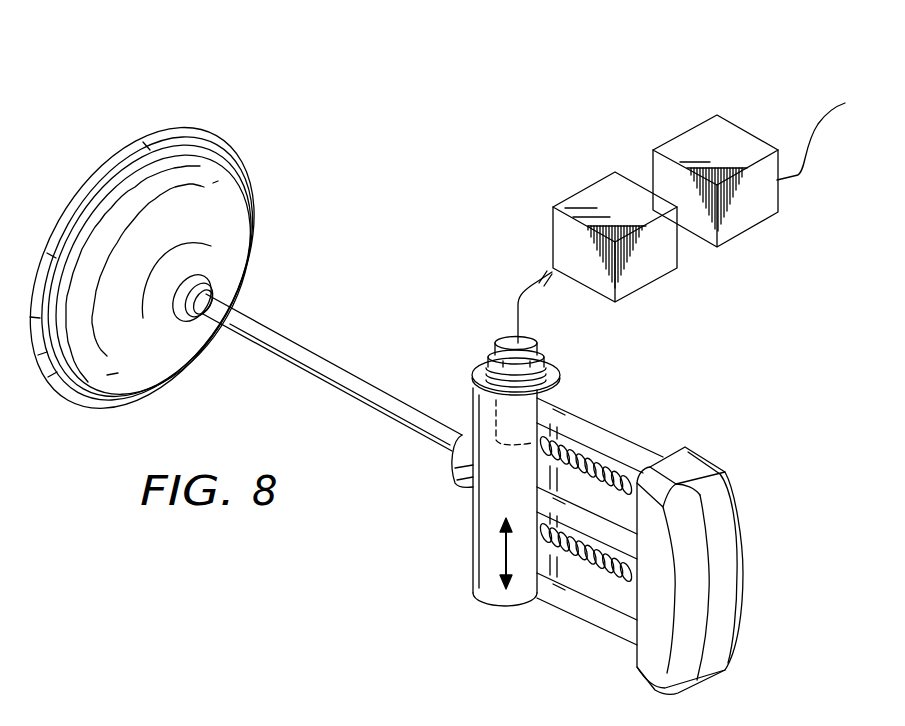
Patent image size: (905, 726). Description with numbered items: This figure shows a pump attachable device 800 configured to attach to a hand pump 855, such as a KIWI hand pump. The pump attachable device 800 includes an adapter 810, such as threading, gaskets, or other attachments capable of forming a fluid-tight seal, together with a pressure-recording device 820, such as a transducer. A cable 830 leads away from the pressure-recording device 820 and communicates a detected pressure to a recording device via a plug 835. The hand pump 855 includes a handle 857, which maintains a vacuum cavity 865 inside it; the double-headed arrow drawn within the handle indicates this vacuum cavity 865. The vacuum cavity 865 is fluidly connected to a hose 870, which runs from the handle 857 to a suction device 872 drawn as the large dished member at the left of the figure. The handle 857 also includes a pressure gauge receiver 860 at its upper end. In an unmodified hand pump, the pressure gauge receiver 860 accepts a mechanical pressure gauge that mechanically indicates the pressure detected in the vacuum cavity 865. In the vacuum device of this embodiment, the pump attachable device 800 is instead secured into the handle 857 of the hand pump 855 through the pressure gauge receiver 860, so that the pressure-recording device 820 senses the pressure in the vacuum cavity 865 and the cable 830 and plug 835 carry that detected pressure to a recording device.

The pump attachable device 800 is at (396, 81).
The adapter 810 is at (555, 368).
The pressure-recording device 820 is at (488, 418).
The cable 830 is at (514, 298).
The plug 835 is at (583, 192).
The hand pump 855 is at (722, 587).
The handle 857 is at (473, 518).
The pressure gauge receiver 860 is at (484, 368).
The vacuum cavity 865 is at (500, 550).
The hose 870 is at (330, 383).
The suction device 872 is at (237, 265).